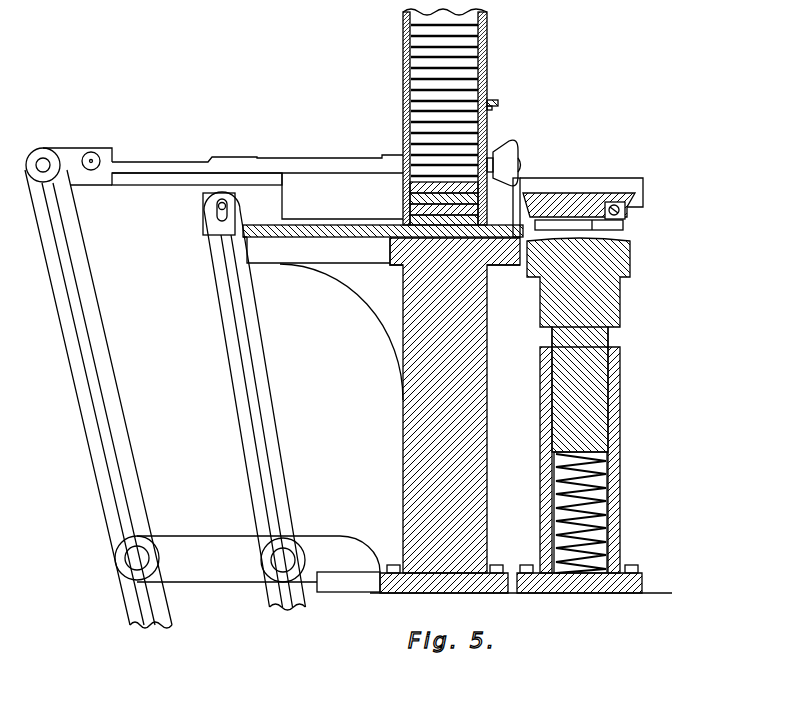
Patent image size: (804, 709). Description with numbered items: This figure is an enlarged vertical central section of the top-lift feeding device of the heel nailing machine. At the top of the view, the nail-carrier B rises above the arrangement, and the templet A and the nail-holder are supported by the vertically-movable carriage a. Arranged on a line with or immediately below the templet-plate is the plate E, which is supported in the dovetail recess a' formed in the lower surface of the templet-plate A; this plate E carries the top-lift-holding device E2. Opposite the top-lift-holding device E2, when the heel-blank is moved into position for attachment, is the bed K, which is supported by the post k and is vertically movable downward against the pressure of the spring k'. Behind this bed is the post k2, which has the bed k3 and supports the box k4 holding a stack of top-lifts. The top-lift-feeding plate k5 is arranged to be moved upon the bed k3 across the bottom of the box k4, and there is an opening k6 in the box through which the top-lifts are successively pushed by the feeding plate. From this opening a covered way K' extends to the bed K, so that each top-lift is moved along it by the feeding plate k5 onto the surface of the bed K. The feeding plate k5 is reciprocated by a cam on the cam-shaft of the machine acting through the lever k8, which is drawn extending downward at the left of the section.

The nail-carrier B is at (435, 117).
The vertically-movable carriage a is at (342, 196).
The box k4 is at (500, 87).
The covered way K' is at (518, 186).
The dovetail recess a' is at (601, 190).
The templet A is at (568, 181).
The plate E is at (596, 212).
The top-lift-holding device E2 is at (623, 229).
The bed K is at (594, 405).
The post k is at (601, 389).
The spring k' is at (601, 512).
The post k2 is at (403, 392).
The bed k3 is at (399, 280).
The top-lift-feeding plate k5 is at (378, 240).
The opening k6 is at (512, 267).
The lever k8 is at (276, 412).